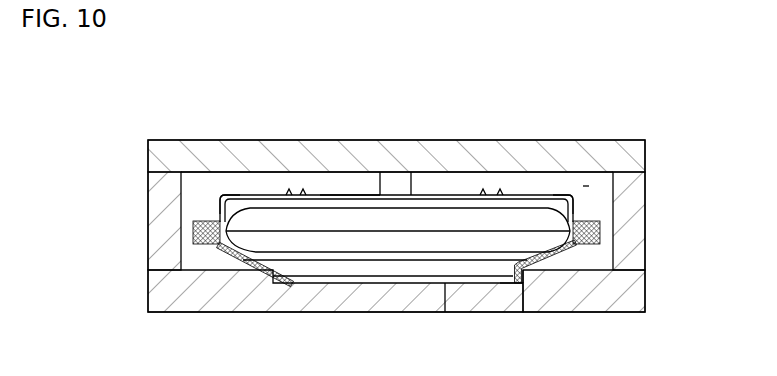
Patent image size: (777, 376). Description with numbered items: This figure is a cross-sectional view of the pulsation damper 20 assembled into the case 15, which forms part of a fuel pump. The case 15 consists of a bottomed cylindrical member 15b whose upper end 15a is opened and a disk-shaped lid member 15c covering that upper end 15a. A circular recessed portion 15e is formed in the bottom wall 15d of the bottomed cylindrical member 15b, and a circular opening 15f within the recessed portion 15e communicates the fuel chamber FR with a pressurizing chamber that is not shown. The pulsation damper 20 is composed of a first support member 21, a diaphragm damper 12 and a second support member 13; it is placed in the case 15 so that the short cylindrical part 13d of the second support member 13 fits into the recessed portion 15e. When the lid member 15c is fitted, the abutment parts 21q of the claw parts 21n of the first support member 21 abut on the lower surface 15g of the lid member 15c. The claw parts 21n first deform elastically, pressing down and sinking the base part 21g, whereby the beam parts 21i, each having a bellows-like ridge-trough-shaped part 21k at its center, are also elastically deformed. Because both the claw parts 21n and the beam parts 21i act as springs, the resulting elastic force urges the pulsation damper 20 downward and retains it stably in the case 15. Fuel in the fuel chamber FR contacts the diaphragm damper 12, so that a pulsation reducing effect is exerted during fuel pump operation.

The case 15 is at (435, 211).
The upper end 15a is at (181, 171).
The bottomed cylindrical member 15b is at (623, 233).
The lid member 15c is at (262, 158).
The bottom wall 15d is at (543, 290).
The recessed portion 15e is at (513, 288).
The opening 15f is at (348, 286).
The lower surface 15g is at (524, 177).
The fuel chamber FR is at (584, 189).
The first support member 21 is at (338, 153).
The beam parts 21i is at (257, 189).
The ridge-trough-shaped part 21k is at (304, 190).
The base part 21g is at (351, 190).
The abutment part 21q is at (399, 174).
The claw parts 21n is at (412, 174).
The diaphragm damper 12 is at (530, 208).
The second support member 13 is at (190, 286).
The short cylindrical part 13d is at (273, 270).
The pulsation damper 20 is at (590, 226).